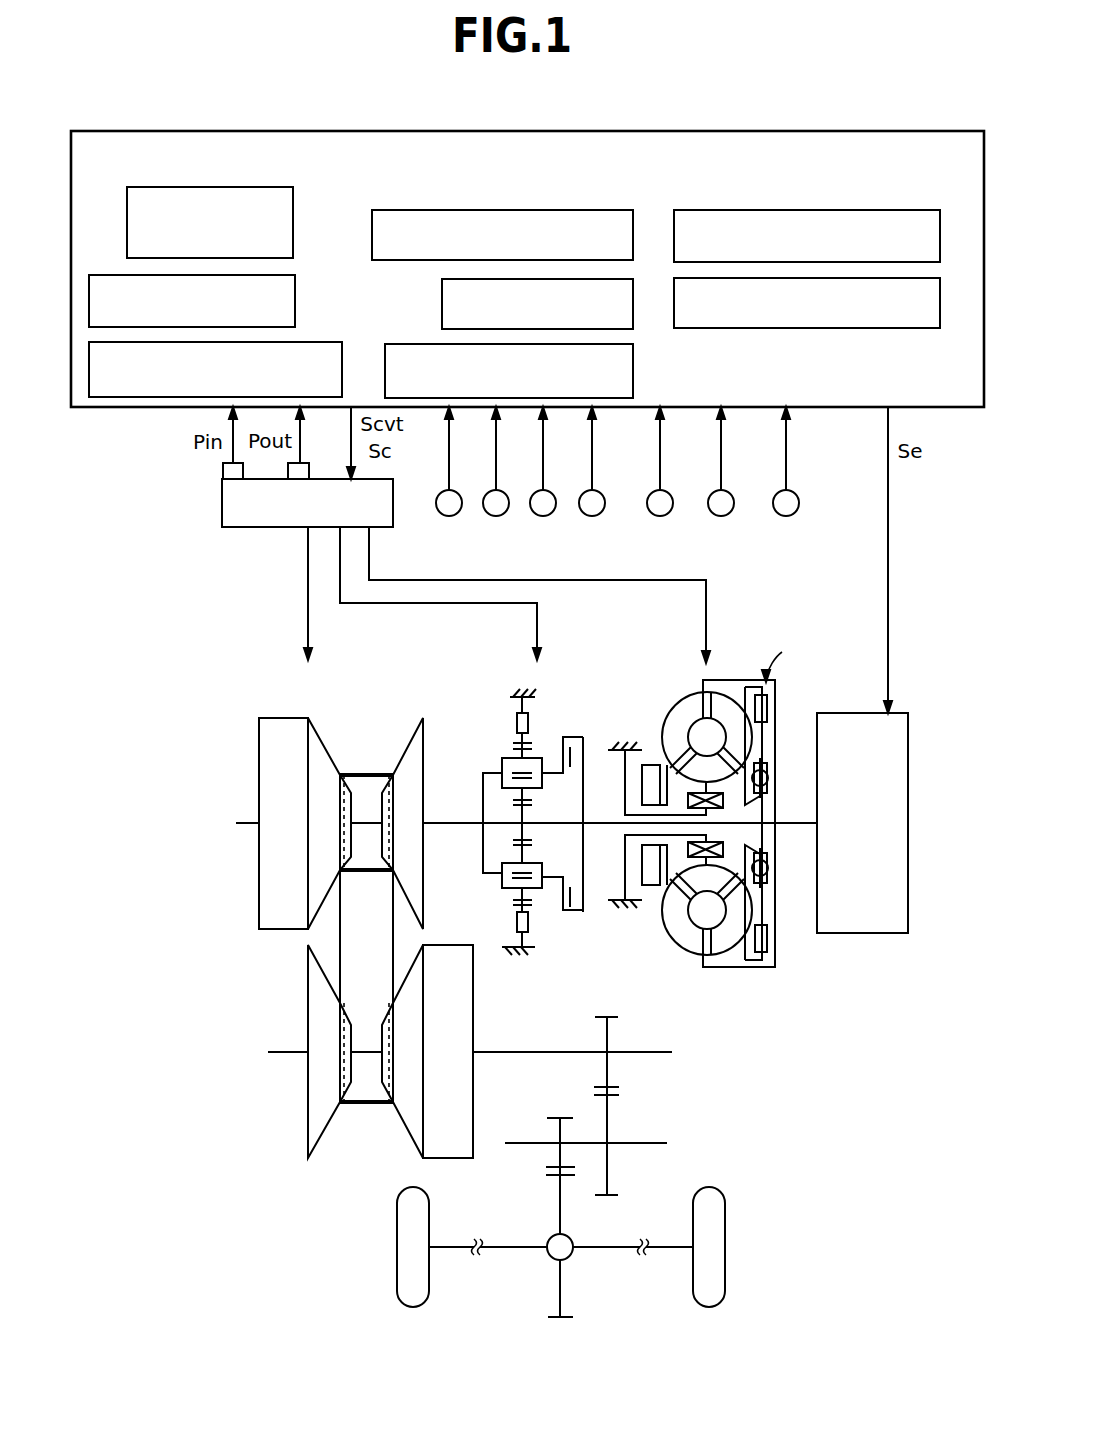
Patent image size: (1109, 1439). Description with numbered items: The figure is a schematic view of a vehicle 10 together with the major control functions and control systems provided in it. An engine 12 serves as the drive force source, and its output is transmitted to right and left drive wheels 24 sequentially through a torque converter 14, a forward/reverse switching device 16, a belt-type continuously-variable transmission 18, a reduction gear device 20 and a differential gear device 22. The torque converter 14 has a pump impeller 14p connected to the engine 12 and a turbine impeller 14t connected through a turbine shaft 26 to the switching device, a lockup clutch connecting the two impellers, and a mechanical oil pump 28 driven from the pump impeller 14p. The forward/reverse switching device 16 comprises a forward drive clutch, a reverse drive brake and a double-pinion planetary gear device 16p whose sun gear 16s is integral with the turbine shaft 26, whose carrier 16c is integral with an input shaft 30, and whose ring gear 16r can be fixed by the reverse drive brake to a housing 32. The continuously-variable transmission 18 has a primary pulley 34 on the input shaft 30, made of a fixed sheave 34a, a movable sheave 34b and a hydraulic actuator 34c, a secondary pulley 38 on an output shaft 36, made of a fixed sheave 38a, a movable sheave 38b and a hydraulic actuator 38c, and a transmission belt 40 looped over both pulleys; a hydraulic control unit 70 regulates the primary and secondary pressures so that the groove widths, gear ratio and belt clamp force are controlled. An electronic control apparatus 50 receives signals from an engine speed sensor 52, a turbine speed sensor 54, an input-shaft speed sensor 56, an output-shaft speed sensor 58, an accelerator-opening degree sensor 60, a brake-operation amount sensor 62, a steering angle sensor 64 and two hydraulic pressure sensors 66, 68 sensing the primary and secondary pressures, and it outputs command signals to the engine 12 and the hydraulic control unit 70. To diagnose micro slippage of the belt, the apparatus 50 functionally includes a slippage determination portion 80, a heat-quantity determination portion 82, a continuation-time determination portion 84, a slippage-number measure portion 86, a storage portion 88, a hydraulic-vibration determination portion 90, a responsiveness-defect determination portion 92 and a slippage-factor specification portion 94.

The vehicle 10 is at (826, 113).
The engine 12 is at (883, 925).
The torque converter 14 is at (728, 663).
The pump impeller 14p is at (677, 933).
The turbine impeller 14t is at (720, 942).
The forward/reverse switching device 16 is at (551, 633).
The planetary gear device 16p is at (522, 676).
The carrier 16c is at (500, 763).
The sun gear 16s is at (510, 833).
The ring gear 16r is at (517, 912).
The belt-type continuously-variable transmission 18 is at (341, 1207).
The reduction gear device 20 is at (674, 1113).
The differential gear device 22 is at (553, 1252).
The drive wheels 24 is at (405, 1272).
The turbine shaft 26 is at (597, 827).
The mechanical oil pump 28 is at (650, 770).
The input shaft 30 is at (447, 823).
The housing 32 is at (540, 697).
The primary pulley 34 is at (321, 831).
The fixed sheave 34a is at (413, 752).
The movable sheave 34b is at (318, 750).
The hydraulic actuator 34c is at (270, 738).
The output shaft 36 is at (540, 1057).
The secondary pulley 38 is at (378, 1079).
The fixed sheave 38a is at (318, 1113).
The movable sheave 38b is at (410, 1110).
The hydraulic actuator 38c is at (467, 1032).
The transmission belt 40 is at (368, 773).
The electronic control apparatus 50 is at (877, 140).
The engine speed sensor 52 is at (449, 516).
The turbine speed sensor 54 is at (496, 516).
The input-shaft speed sensor 56 is at (543, 516).
The output-shaft speed sensor 58 is at (592, 516).
The accelerator-opening degree sensor 60 is at (660, 516).
The brake-operation amount sensor 62 is at (721, 516).
The steering angle sensor 64 is at (786, 516).
The hydraulic pressure sensor 66 is at (225, 472).
The hydraulic pressure sensor 68 is at (309, 472).
The hydraulic control unit 70 is at (447, 549).
The slippage determination portion 80 is at (292, 205).
The heat-quantity determination portion 82 is at (633, 232).
The continuation-time determination portion 84 is at (940, 232).
The slippage-number measure portion 86 is at (292, 299).
The storage portion 88 is at (633, 302).
The hydraulic-vibration determination portion 90 is at (940, 300).
The responsiveness-defect determination portion 92 is at (340, 387).
The slippage-factor specification portion 94 is at (633, 392).